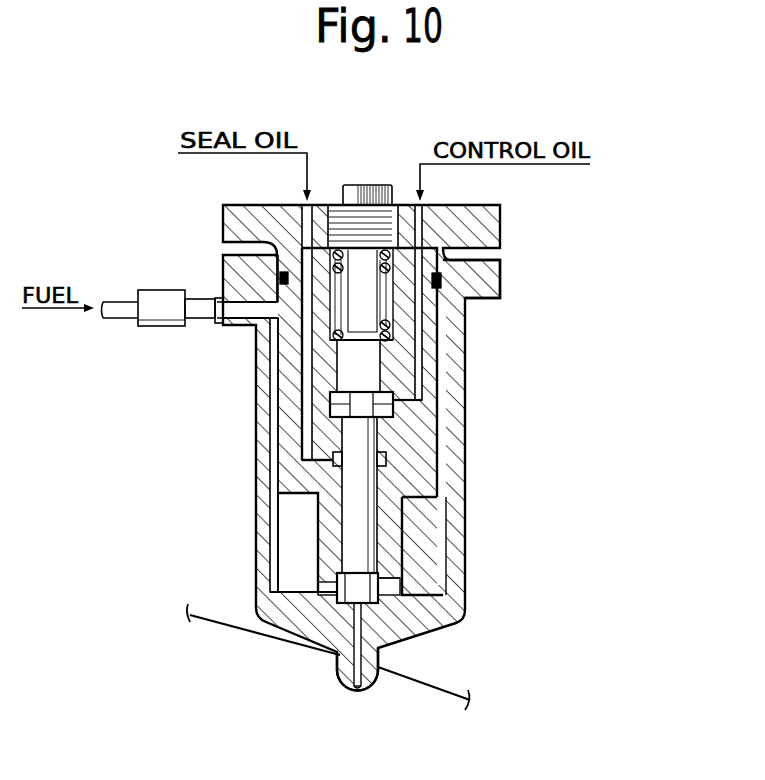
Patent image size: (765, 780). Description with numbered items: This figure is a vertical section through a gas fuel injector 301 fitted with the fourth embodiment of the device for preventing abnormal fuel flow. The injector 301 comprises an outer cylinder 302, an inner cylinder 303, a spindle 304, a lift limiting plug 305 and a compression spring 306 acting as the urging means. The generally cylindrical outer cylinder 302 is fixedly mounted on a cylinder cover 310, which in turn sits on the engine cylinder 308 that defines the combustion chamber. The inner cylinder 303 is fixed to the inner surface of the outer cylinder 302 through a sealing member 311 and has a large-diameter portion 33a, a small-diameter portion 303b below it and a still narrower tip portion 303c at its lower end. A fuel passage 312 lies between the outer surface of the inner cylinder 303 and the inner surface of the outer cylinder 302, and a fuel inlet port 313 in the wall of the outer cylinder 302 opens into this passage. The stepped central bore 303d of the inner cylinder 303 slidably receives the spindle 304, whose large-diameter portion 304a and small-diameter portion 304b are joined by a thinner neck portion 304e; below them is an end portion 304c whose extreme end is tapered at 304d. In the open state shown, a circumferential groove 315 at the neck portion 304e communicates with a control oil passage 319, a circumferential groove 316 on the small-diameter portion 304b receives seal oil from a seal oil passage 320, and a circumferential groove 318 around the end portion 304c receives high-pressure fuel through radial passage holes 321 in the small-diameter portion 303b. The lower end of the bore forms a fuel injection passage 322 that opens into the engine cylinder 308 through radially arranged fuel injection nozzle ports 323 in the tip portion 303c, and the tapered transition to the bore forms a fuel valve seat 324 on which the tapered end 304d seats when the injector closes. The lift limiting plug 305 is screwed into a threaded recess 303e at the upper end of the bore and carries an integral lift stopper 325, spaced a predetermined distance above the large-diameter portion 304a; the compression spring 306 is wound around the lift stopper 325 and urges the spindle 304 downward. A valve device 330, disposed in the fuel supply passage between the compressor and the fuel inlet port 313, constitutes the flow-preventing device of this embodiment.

The fuel injector 301 is at (396, 166).
The outer cylinder 302 is at (222, 264).
The inner cylinder 303 is at (220, 212).
The small-diameter portion 303b is at (317, 538).
The tip portion 303c is at (383, 657).
The central bore 303d is at (416, 508).
The threaded recess 303e is at (447, 270).
The spindle 304 is at (405, 395).
The large-diameter portion 304a is at (395, 406).
The small-diameter portion 304b is at (406, 480).
The end portion 304c is at (400, 602).
The tapered end 304d is at (388, 602).
The neck portion 304e is at (378, 436).
The lift limiting plug 305 is at (338, 190).
The compression spring 306 is at (392, 332).
The engine cylinder 308 is at (236, 668).
The cylinder cover 310 is at (452, 668).
The sealing member 311 is at (441, 285).
The fuel passage 312 is at (260, 368).
The fuel inlet port 313 is at (238, 318).
The circumferential groove 315 is at (336, 462).
The circumferential groove 316 is at (300, 502).
The circumferential groove 318 is at (415, 557).
The control oil passage 319 is at (423, 230).
The seal oil passage 320 is at (305, 232).
The radial passage holes 321 is at (402, 585).
The fuel injection passage 322 is at (333, 658).
The fuel injection nozzle ports 323 is at (356, 690).
The fuel valve seat 324 is at (340, 642).
The lift stopper 325 is at (366, 306).
The valve device 330 is at (148, 333).
The large-diameter portion 33a is at (335, 430).